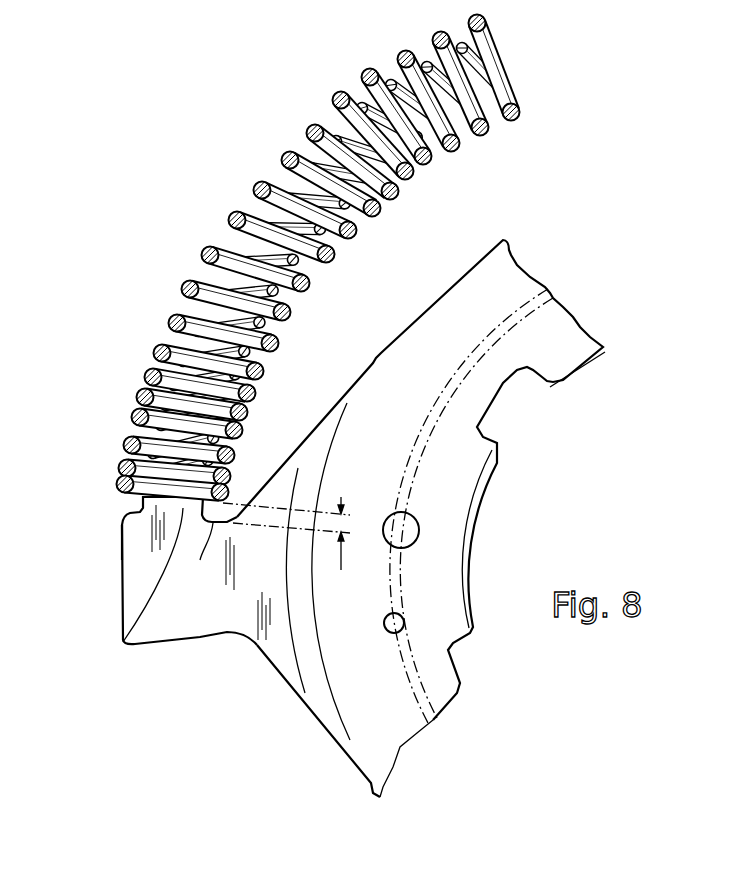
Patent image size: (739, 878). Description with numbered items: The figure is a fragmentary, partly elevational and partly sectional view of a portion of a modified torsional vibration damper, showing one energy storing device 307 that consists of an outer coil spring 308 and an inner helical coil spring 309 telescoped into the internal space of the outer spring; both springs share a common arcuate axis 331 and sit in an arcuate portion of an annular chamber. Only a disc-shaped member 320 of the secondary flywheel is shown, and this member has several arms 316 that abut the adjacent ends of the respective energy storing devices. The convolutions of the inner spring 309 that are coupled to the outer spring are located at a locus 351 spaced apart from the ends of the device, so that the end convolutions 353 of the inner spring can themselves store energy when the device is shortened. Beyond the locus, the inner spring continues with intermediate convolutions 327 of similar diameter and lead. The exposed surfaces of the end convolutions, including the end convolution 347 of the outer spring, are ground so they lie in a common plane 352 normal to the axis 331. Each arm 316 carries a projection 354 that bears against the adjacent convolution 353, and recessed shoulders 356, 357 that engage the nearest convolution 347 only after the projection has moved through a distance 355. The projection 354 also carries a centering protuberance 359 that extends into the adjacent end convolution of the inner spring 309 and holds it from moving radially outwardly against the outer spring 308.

The energy storing device 307 is at (178, 224).
The outer coil spring 308 is at (308, 128).
The inner coil spring 309 is at (460, 120).
The arm 316 is at (137, 580).
The disc-shaped member 320 is at (343, 660).
The intermediate convolutions 327 is at (287, 283).
The arcuate axis 331 is at (507, 60).
The end convolution of outer spring 347 is at (232, 513).
The locus 351 is at (137, 365).
The common plane 352 is at (123, 493).
The end convolutions of inner spring 353 is at (123, 445).
The projection 354 is at (127, 613).
The distance 355 is at (344, 535).
The recessed shoulder 356 is at (122, 528).
The recessed shoulder 357 is at (197, 555).
The centering protuberance 359 is at (119, 475).